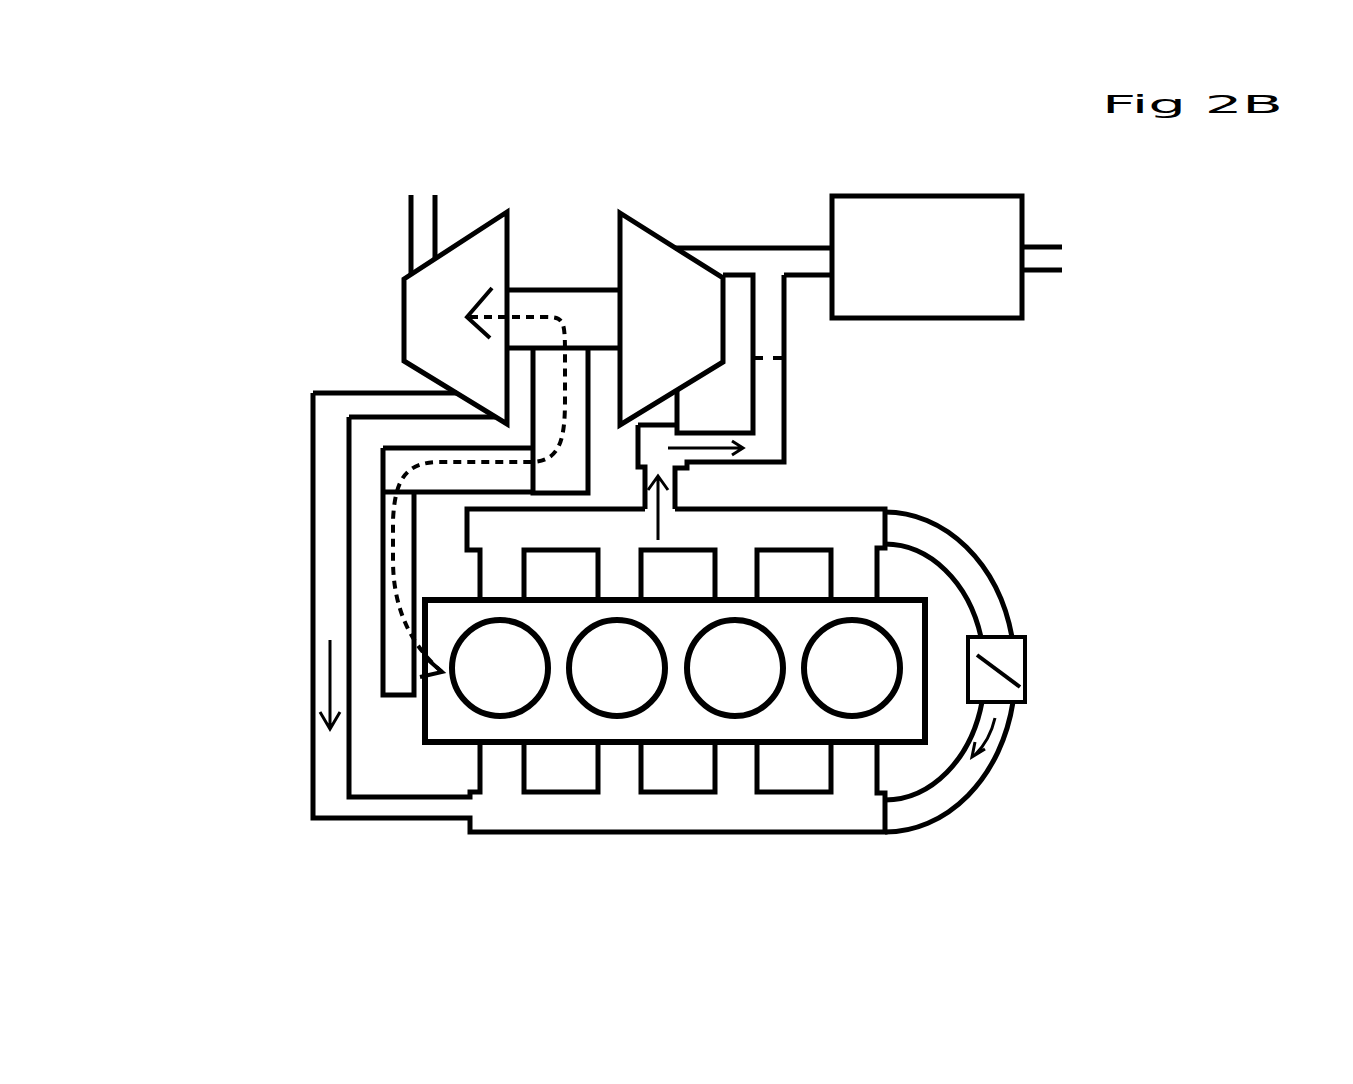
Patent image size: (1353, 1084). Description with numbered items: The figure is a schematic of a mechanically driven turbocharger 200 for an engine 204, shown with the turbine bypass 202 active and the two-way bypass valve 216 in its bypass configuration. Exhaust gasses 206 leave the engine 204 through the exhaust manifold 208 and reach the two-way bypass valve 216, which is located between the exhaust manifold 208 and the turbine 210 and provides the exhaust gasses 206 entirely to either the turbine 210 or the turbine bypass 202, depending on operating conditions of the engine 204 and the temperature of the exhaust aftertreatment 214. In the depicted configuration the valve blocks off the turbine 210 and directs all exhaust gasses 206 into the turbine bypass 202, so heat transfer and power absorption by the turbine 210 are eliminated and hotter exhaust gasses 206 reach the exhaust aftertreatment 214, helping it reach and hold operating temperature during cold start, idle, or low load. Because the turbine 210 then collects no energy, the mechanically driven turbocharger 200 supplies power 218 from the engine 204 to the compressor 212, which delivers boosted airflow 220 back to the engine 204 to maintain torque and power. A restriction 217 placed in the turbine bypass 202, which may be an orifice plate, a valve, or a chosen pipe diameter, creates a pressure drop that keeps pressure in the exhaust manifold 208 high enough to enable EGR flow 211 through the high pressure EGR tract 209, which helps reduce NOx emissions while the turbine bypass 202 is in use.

The mechanically driven turbocharger 200 is at (466, 233).
The turbine bypass 202 is at (765, 326).
The engine 204 is at (670, 710).
The exhaust gasses 206 is at (660, 508).
The exhaust manifold 208 is at (842, 530).
The high pressure EGR tract 209 is at (942, 783).
The turbine 210 is at (702, 283).
The EGR flow 211 is at (992, 742).
The compressor 212 is at (468, 235).
The exhaust aftertreatment 214 is at (935, 210).
The two-way bypass valve 216 is at (660, 425).
The restriction 217 is at (778, 358).
The power 218 is at (468, 307).
The boosted airflow 220 is at (327, 660).